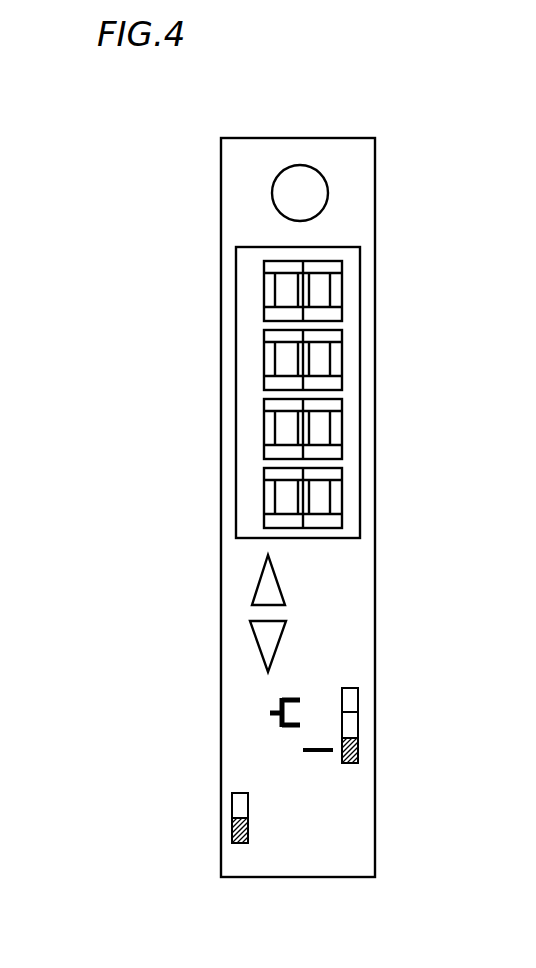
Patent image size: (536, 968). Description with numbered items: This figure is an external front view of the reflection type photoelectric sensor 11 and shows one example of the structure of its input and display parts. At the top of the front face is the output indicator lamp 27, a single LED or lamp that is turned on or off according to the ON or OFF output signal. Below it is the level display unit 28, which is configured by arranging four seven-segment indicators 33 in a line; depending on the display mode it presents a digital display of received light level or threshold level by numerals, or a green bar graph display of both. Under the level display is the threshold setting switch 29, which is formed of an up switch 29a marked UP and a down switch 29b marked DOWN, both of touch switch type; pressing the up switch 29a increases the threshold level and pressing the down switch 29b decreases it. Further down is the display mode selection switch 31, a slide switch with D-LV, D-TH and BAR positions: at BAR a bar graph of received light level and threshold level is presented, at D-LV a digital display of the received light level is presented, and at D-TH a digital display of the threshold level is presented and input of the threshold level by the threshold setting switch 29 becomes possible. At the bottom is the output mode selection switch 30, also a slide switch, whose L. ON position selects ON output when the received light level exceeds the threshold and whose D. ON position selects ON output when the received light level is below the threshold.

The reflection type photoelectric sensor 11 is at (437, 107).
The output indicator lamp 27 is at (313, 192).
The level display unit 28 is at (248, 390).
The threshold setting switch 29 is at (223, 613).
The up switch 29a is at (263, 590).
The down switch 29b is at (263, 633).
The output mode selection switch 30 is at (233, 832).
The display mode selection switch 31 is at (358, 751).
The 7-segment indicator 33 is at (342, 292).